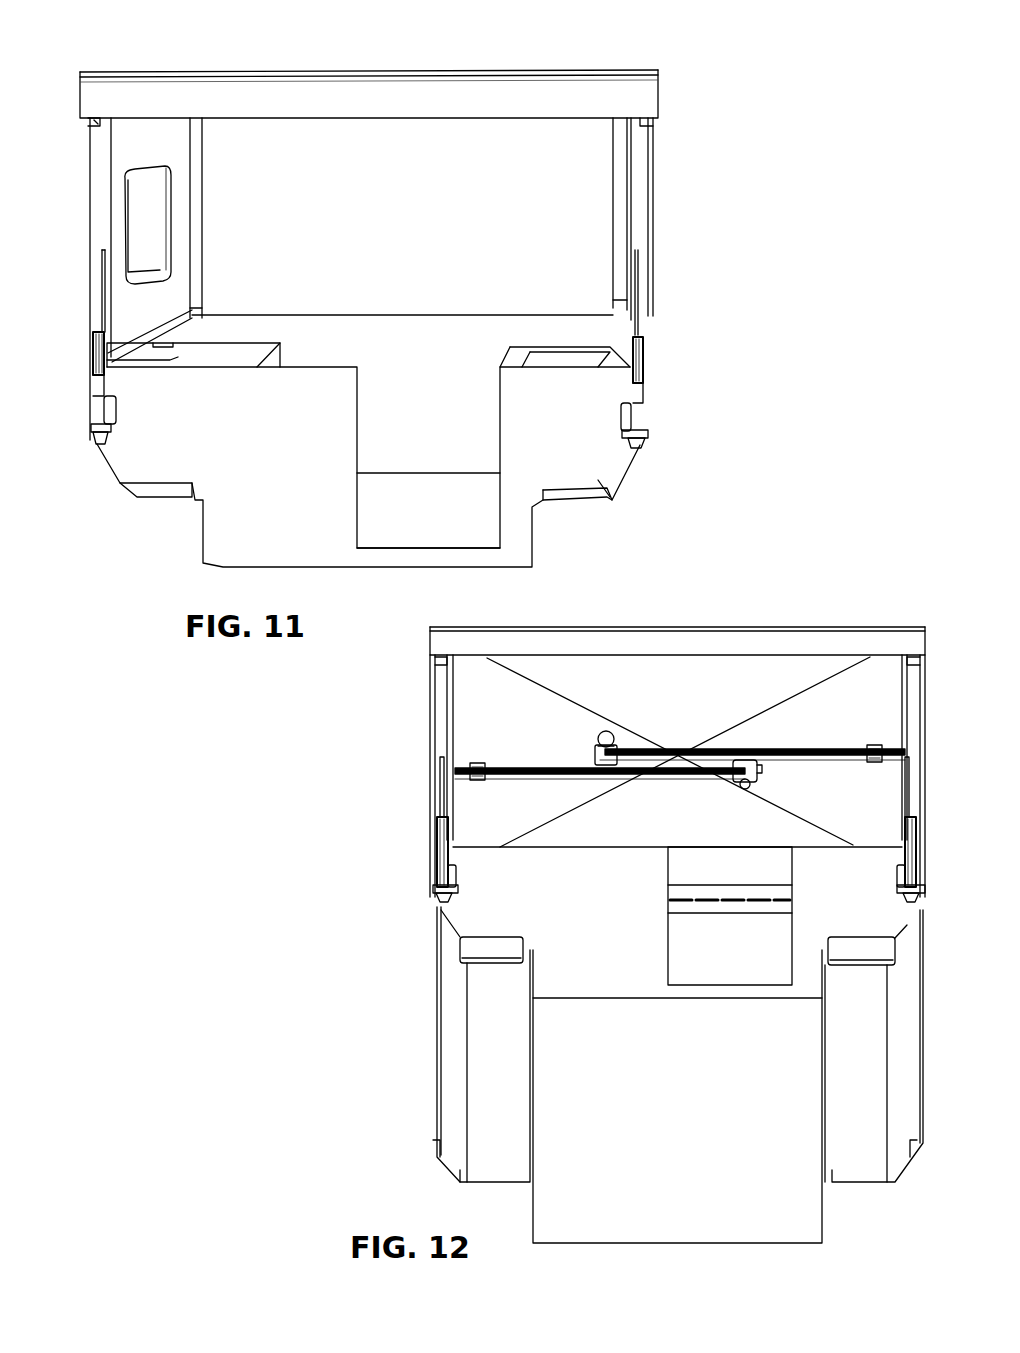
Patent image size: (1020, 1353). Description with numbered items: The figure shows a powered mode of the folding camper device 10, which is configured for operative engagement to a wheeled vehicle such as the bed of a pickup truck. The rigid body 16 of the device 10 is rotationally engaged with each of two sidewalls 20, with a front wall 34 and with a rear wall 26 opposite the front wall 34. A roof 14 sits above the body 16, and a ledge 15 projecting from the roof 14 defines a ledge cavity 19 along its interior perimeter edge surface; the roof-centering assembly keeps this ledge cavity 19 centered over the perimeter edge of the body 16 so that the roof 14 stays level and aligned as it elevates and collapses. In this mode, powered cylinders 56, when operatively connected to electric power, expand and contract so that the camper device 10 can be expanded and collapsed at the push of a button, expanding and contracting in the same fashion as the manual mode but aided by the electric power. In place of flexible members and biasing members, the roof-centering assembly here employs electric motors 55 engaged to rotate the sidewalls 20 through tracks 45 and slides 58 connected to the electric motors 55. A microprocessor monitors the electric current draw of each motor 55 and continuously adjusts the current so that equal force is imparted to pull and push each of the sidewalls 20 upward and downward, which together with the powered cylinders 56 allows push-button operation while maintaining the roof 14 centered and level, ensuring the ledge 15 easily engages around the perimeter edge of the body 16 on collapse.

In FIG. 11, the folding camper device 10 is at (712, 199).
In FIG. 11, the roof 14 is at (658, 72).
In FIG. 12, the roof 14 is at (588, 628).
In FIG. 11, the ledge 15 is at (640, 106).
In FIG. 12, the ledge 15 is at (884, 633).
In FIG. 11, the body 16 is at (618, 496).
In FIG. 12, the body 16 is at (458, 1130).
In FIG. 11, the ledge cavity 19 is at (404, 170).
In FIG. 12, the ledge cavity 19 is at (714, 666).
In FIG. 11, the sidewalls 20 is at (98, 195).
In FIG. 12, the sidewalls 20 is at (440, 712).
In FIG. 11, the rear wall 26 is at (298, 383).
In FIG. 11, the front wall 34 is at (330, 328).
In FIG. 12, the tracks 45 is at (552, 774).
In FIG. 12, the electric motors 55 is at (604, 730).
In FIG. 11, the powered cylinders 56 is at (94, 316).
In FIG. 12, the slides 58 is at (480, 765).